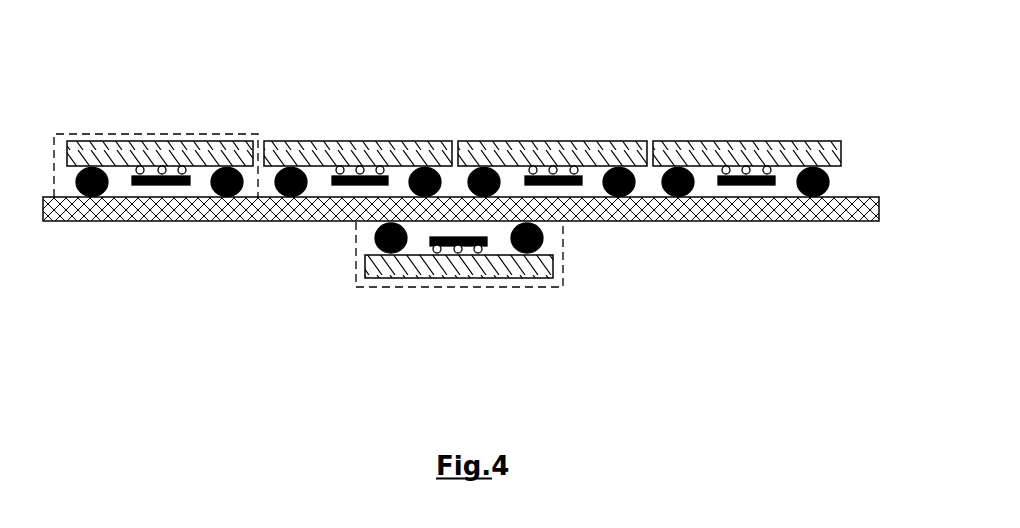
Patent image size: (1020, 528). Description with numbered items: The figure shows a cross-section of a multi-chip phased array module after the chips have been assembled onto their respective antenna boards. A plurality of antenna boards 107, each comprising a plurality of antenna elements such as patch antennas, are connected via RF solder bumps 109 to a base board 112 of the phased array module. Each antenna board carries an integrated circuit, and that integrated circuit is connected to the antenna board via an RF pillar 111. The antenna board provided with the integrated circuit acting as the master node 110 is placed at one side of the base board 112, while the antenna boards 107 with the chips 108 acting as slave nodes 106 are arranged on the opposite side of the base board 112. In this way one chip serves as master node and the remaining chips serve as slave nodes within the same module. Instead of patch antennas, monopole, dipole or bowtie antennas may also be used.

The slave node 106 is at (75, 134).
The antenna board 107 is at (155, 141).
The chip 108 is at (150, 184).
The RF solder bump 109 is at (180, 170).
The master node 110 is at (350, 288).
The RF pillar 111 is at (305, 180).
The base board 112 is at (710, 220).